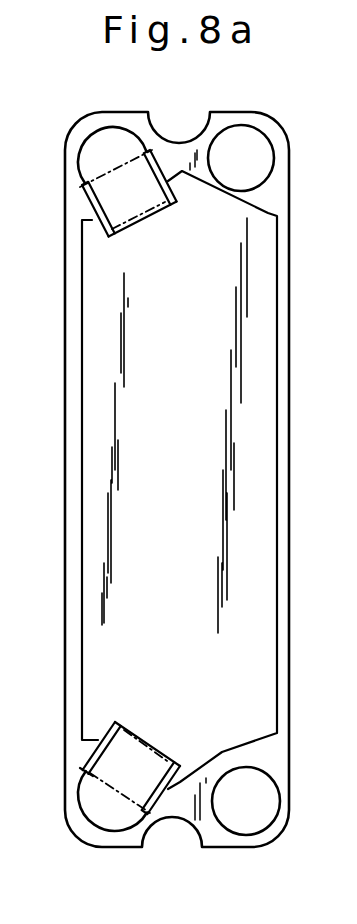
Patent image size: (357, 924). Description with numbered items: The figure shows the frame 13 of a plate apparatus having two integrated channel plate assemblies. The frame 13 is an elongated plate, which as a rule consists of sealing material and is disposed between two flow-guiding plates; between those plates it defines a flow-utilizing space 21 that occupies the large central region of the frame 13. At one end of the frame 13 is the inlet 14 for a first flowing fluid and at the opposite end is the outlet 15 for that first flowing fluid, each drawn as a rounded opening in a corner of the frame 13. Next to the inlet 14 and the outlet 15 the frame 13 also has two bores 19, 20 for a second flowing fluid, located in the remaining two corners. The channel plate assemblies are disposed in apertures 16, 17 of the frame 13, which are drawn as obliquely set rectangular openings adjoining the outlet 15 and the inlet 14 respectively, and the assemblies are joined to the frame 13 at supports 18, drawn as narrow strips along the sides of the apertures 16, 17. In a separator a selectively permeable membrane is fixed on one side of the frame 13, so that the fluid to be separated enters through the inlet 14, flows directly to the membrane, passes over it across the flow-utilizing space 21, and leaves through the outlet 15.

The frame 13 is at (72, 392).
The inlet 14 is at (100, 806).
The outlet 15 is at (93, 145).
The aperture 16 is at (137, 200).
The aperture 17 is at (135, 775).
The supports 18 is at (152, 160).
The bore 19 is at (245, 147).
The bore 20 is at (257, 812).
The flow-utilizing space 21 is at (188, 530).